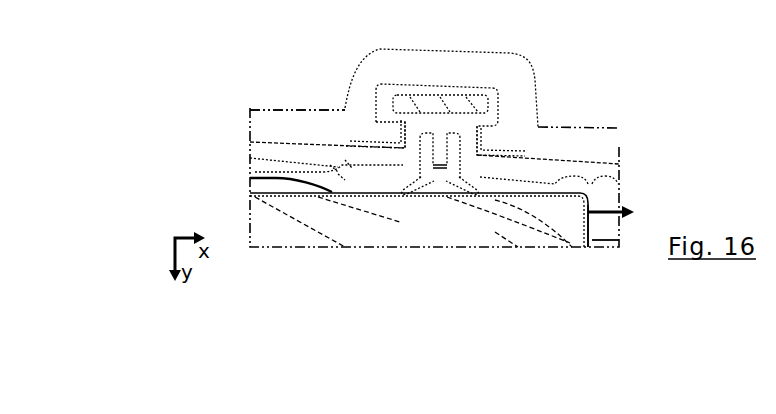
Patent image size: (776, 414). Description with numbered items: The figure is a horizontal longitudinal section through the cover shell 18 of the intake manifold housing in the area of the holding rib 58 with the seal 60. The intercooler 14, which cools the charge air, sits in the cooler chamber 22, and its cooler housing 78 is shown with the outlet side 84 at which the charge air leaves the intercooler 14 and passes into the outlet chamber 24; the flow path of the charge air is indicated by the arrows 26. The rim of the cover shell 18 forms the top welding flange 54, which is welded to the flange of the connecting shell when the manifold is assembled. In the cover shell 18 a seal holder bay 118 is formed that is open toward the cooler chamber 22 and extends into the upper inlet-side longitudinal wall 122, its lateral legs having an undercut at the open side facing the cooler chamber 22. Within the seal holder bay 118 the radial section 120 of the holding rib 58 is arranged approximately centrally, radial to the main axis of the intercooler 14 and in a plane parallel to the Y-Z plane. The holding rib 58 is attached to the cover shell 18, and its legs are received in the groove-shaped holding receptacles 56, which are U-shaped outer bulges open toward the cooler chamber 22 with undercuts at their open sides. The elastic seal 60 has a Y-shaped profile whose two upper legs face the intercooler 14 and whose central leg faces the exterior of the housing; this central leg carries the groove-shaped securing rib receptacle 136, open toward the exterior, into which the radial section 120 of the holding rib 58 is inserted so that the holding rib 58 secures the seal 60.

The intercooler 14 is at (279, 235).
The cover shell 18 is at (265, 121).
The cooler chamber 22 is at (250, 177).
The outlet chamber 24 is at (605, 230).
The arrows 26 is at (633, 212).
The top welding flange 54 is at (606, 144).
The holding receptacle 56 is at (384, 112).
The holding rib 58 is at (428, 98).
The seal 60 is at (445, 174).
The cooler housing 78 is at (252, 194).
The outlet side 84 is at (592, 246).
The seal holder bay 118 is at (467, 144).
The radial section 120 is at (442, 126).
The upper inlet-side longitudinal wall 122 is at (288, 120).
The securing rib receptacle 136 is at (435, 164).